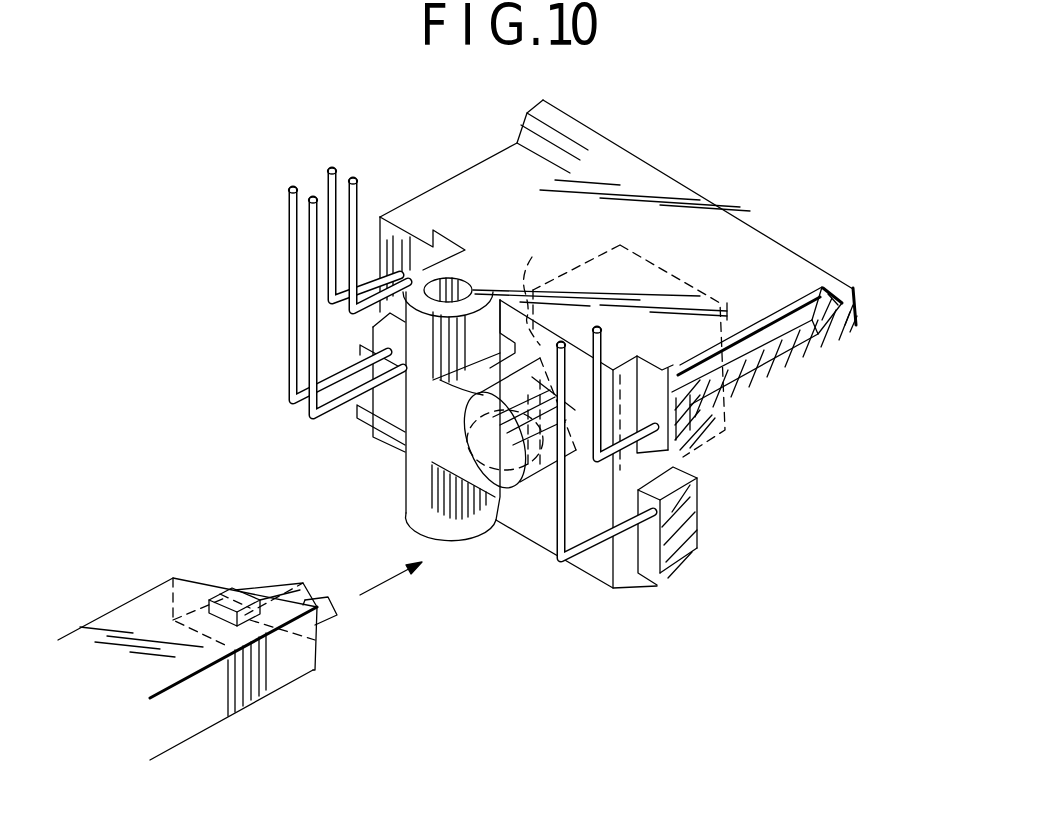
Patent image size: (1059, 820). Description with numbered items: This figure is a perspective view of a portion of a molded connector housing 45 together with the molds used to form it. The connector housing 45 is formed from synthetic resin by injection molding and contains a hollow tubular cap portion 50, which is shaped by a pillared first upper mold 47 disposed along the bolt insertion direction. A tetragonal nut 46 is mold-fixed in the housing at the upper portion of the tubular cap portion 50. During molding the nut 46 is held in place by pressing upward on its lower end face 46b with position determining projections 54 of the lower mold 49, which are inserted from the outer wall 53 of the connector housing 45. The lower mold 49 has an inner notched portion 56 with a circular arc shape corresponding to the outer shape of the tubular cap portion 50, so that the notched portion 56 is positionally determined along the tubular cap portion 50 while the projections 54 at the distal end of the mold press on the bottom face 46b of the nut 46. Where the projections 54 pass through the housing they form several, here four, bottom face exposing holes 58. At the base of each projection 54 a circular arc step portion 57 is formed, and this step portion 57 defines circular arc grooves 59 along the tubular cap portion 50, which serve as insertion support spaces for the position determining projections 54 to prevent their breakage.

The connector housing 45 is at (693, 182).
The tetragonal nut 46 is at (700, 283).
The nut lower end face 46b is at (530, 284).
The first upper mold 47 is at (153, 0).
The lower mold 49 is at (97, 619).
The tubular cap portion 50 is at (463, 538).
The outer wall 53 is at (535, 543).
The position determining projections 54 is at (332, 623).
The inner notched portion 56 is at (278, 590).
The circular arc step portion 57 is at (308, 598).
The bottom face exposing holes 58 is at (572, 543).
The circular arc grooves 59 is at (535, 482).